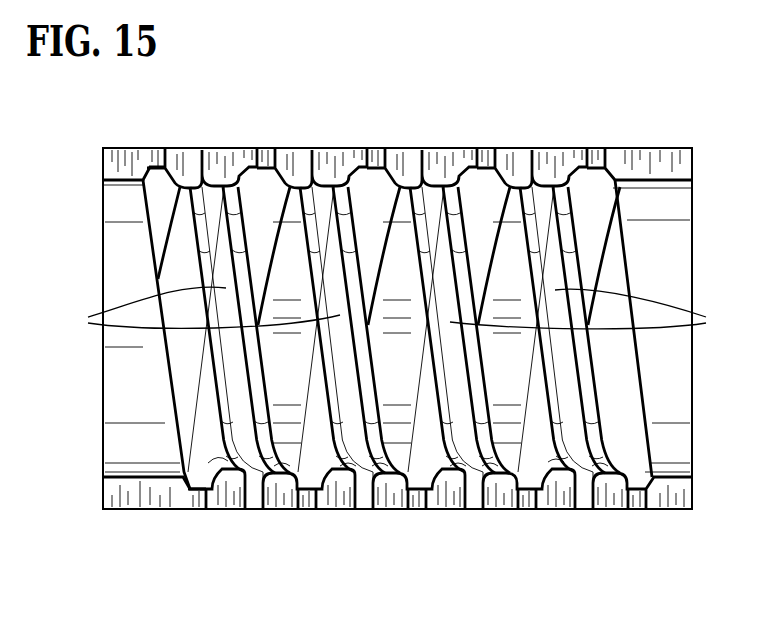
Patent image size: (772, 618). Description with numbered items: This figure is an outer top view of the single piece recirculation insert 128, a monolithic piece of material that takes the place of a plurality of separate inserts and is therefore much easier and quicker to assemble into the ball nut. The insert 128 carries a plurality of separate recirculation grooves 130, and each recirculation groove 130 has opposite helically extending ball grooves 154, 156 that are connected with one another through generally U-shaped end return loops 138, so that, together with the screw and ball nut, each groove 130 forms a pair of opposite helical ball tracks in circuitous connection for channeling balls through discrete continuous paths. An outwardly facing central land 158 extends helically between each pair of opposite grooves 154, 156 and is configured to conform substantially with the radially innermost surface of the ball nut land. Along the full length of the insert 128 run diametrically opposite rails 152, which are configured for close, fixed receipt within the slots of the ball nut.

The single piece recirculation insert 128 is at (667, 100).
The recirculation groove 130 is at (233, 167).
The end return loop 138 is at (185, 157).
The rail 152 is at (693, 167).
The helically extending ball groove 154 is at (282, 468).
The helically extending ball groove 156 is at (228, 453).
The central land 158 is at (389, 309).